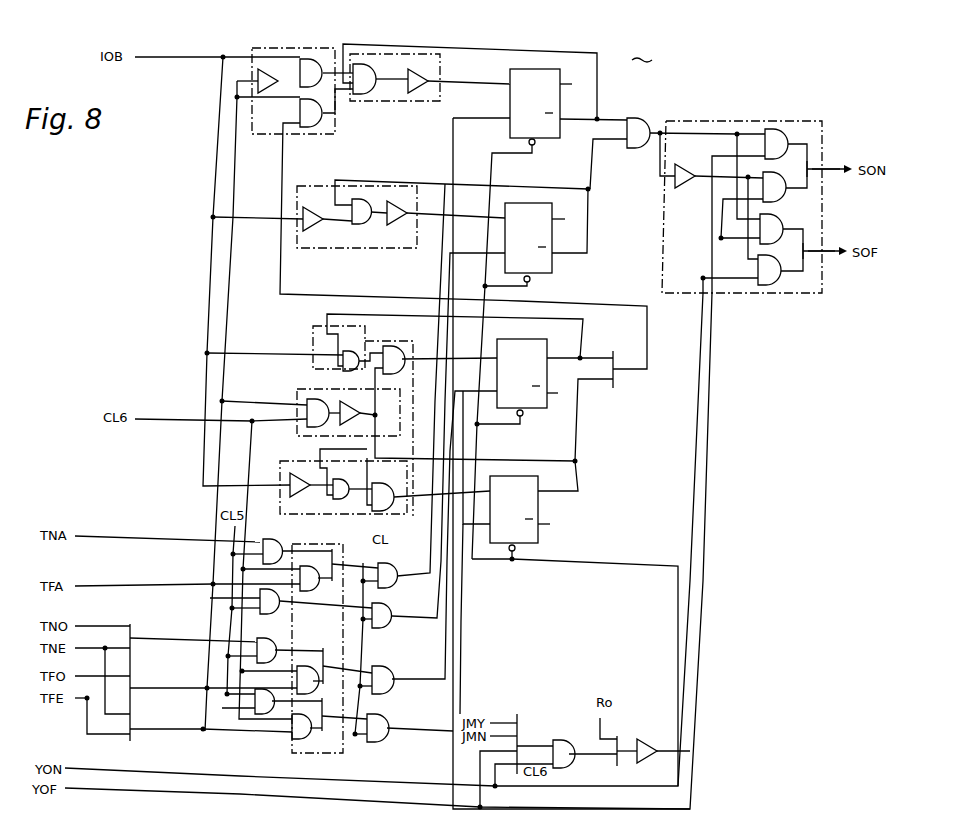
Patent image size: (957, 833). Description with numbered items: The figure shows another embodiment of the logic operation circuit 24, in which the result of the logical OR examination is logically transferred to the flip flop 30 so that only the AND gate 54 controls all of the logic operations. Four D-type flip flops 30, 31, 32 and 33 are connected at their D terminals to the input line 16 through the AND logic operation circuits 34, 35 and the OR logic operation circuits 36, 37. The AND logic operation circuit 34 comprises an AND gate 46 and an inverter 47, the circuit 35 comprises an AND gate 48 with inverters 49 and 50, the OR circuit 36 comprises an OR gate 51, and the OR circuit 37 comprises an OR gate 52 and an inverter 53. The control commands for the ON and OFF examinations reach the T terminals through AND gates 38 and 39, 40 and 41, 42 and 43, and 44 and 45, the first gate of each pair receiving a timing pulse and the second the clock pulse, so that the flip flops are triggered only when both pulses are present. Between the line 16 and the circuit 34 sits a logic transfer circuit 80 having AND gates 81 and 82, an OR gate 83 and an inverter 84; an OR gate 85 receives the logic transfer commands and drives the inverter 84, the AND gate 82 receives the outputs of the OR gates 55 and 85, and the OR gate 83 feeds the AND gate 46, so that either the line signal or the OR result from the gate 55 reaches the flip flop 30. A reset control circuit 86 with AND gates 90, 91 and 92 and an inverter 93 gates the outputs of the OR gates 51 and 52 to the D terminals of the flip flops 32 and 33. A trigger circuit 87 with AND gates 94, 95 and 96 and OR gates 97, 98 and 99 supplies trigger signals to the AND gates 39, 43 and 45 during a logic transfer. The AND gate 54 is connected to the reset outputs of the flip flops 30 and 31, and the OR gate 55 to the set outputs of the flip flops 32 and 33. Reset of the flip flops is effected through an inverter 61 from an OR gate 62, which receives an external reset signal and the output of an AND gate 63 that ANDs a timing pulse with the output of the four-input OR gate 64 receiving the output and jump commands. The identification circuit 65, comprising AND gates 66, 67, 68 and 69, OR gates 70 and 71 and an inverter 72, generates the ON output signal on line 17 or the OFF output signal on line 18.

The line 16 is at (182, 54).
The line 17 is at (830, 171).
The line 18 is at (830, 256).
The logic operation circuit 24 is at (642, 52).
The D-type flip flop 30 is at (548, 68).
The D-type flip flop 31 is at (540, 203).
The D-type flip flop 32 is at (520, 339).
The D-type flip flop 33 is at (515, 477).
The AND logic operation circuit 34 is at (446, 58).
The AND logic operation circuit 35 is at (418, 192).
The OR logic operation circuit 36 is at (372, 329).
The OR logic operation circuit 37 is at (285, 461).
The AND gate 38 is at (276, 539).
The AND gate 39 is at (398, 572).
The AND gate 40 is at (278, 599).
The AND gate 41 is at (393, 617).
The AND gate 42 is at (277, 636).
The AND gate 43 is at (392, 675).
The AND gate 44 is at (273, 700).
The AND gate 45 is at (390, 724).
The AND gate 46 is at (368, 94).
The inverter 47 is at (415, 93).
The AND gate 48 is at (360, 225).
The inverter 49 is at (313, 231).
The inverter 50 is at (398, 226).
The OR gate 51 is at (349, 366).
The OR gate 52 is at (348, 500).
The inverter 53 is at (307, 497).
The AND gate 54 is at (645, 121).
The OR gate 55 is at (615, 360).
The inverter 61 is at (650, 740).
The OR gate 62 is at (619, 738).
The AND gate 63 is at (565, 740).
The OR gate 64 is at (520, 734).
The identification circuit 65 is at (740, 120).
The AND gate 66 is at (783, 130).
The AND gate 67 is at (783, 172).
The AND gate 68 is at (780, 214).
The AND gate 69 is at (778, 256).
The OR gate 70 is at (810, 158).
The OR gate 71 is at (806, 249).
The inverter 72 is at (690, 165).
The logic transfer circuit 80 is at (292, 46).
The AND gate 81 is at (335, 62).
The AND gate 82 is at (317, 118).
The OR gate 83 is at (338, 100).
The inverter 84 is at (290, 76).
The OR gate 85 is at (132, 714).
The circuit for applying a reset control signal 86 is at (414, 390).
The circuit for applying a trigger signal 87 is at (320, 544).
The AND gate 90 is at (348, 412).
The AND gate 91 is at (393, 375).
The AND gate 92 is at (390, 482).
The inverter 93 is at (360, 410).
The AND gate 94 is at (315, 585).
The AND gate 95 is at (315, 686).
The AND gate 96 is at (310, 735).
The OR gate 97 is at (336, 562).
The OR gate 98 is at (327, 665).
The OR gate 99 is at (326, 716).